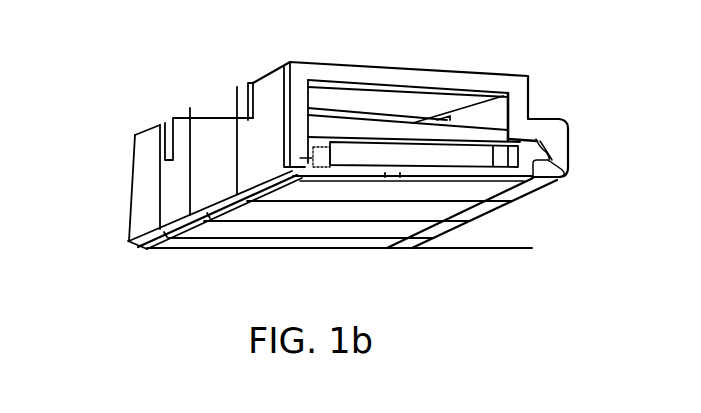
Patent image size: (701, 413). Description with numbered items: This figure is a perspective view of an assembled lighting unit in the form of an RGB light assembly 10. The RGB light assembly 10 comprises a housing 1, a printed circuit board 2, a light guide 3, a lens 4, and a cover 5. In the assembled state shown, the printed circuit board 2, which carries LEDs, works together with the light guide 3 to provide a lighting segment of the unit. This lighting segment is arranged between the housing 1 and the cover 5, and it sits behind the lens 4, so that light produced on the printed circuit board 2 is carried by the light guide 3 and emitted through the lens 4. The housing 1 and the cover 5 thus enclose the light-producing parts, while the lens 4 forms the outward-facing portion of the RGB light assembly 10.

The housing 1 is at (142, 183).
The printed circuit board 2 is at (407, 133).
The light guide 3 is at (460, 155).
The lens 4 is at (543, 169).
The cover 5 is at (210, 238).
The RGB light assembly 10 is at (116, 257).